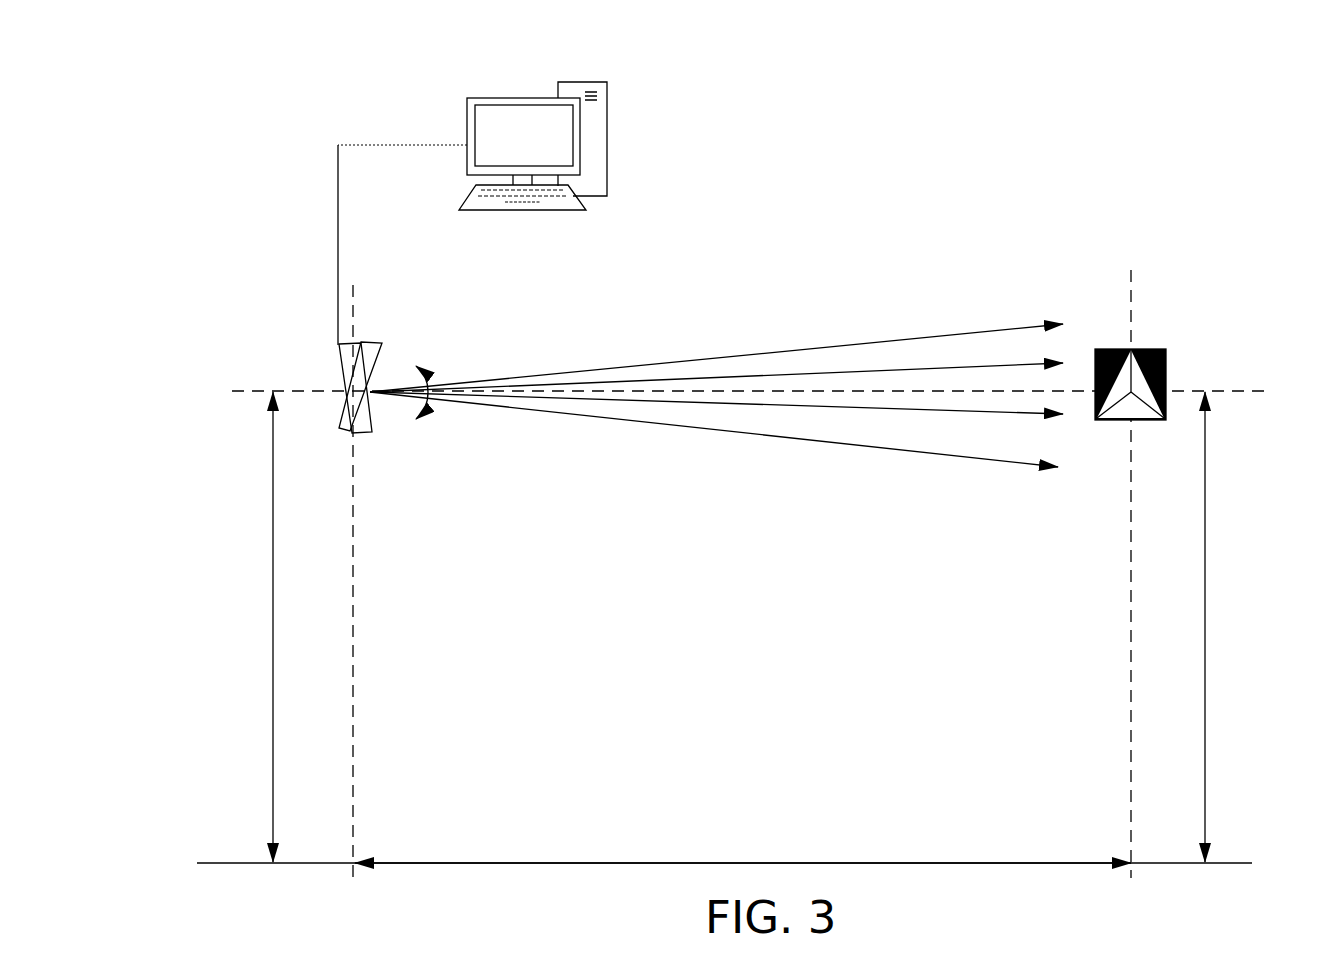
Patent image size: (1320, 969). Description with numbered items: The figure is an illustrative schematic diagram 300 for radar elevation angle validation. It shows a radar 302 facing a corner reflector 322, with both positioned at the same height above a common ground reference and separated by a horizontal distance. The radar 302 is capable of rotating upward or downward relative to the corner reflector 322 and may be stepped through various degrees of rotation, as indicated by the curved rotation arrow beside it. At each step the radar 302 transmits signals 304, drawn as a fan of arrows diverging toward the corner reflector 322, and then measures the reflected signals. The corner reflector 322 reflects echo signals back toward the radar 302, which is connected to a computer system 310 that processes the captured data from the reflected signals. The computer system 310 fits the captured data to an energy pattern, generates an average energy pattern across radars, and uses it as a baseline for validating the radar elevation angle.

The schematic diagram 300 is at (1132, 38).
The radar 302 is at (372, 342).
The signals 304 is at (765, 350).
The computer system 310 is at (497, 97).
The corner reflector 322 is at (1148, 349).